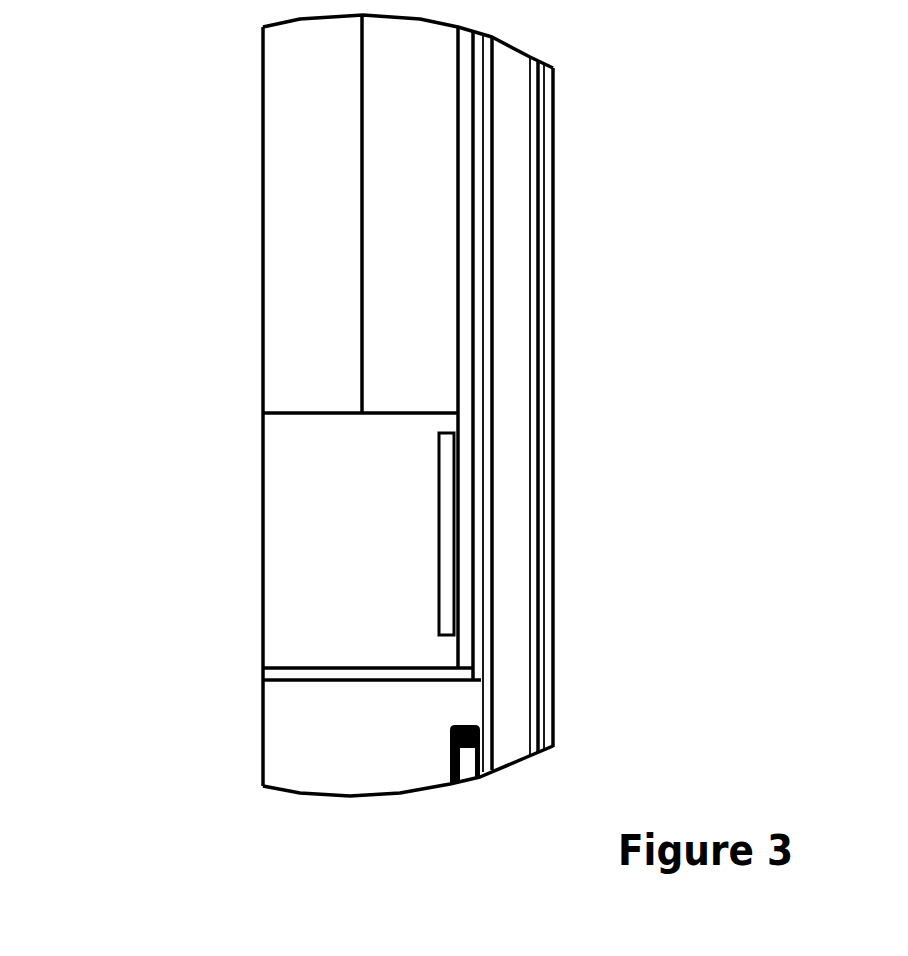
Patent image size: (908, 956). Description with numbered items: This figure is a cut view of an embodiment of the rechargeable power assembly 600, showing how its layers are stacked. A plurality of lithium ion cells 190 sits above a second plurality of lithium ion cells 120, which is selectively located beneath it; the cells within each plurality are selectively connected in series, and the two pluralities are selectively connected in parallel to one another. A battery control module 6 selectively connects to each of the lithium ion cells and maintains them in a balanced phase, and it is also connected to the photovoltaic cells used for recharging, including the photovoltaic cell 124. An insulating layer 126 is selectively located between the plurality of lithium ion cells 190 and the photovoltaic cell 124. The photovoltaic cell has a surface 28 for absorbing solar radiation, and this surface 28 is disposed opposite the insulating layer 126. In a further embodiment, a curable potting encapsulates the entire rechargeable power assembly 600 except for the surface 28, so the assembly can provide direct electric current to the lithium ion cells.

The plurality of lithium ion cells 120 is at (312, 111).
The plurality of lithium ion cells 190 is at (408, 275).
The photovoltaic cell 124 is at (505, 124).
The rechargeable power assembly 600 is at (558, 290).
The surface for absorbing solar radiation 28 is at (553, 350).
The battery control module 6 is at (446, 465).
The insulating layer 126 is at (465, 650).